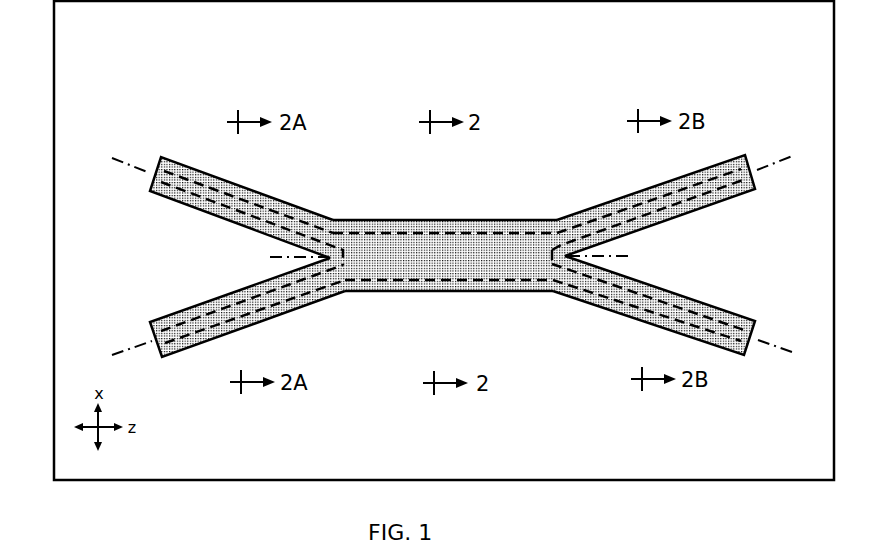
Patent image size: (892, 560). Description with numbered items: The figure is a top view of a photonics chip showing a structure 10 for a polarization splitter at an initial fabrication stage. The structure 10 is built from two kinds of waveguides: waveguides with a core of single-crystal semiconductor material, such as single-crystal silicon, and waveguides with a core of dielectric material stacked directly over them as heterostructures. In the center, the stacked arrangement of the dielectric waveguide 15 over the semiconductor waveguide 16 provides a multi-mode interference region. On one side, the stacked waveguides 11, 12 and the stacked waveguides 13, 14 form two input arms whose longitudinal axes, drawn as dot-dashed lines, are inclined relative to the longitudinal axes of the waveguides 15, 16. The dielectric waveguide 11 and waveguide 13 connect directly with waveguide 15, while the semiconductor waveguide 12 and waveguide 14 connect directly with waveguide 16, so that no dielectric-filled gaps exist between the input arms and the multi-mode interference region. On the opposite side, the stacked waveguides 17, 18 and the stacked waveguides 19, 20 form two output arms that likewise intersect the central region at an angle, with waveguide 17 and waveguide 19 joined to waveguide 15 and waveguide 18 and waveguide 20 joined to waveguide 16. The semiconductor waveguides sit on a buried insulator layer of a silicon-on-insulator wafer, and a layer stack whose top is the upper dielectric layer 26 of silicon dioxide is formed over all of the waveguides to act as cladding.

The structure 10 is at (153, 83).
The waveguide 11 is at (225, 183).
The waveguide 12 is at (198, 168).
The waveguide 13 is at (217, 332).
The waveguide 14 is at (187, 353).
The waveguide 15 is at (362, 291).
The waveguide 16 is at (395, 282).
The waveguide 17 is at (612, 205).
The waveguide 18 is at (590, 200).
The waveguide 19 is at (585, 292).
The waveguide 20 is at (608, 300).
The upper dielectric layer 26 is at (790, 443).